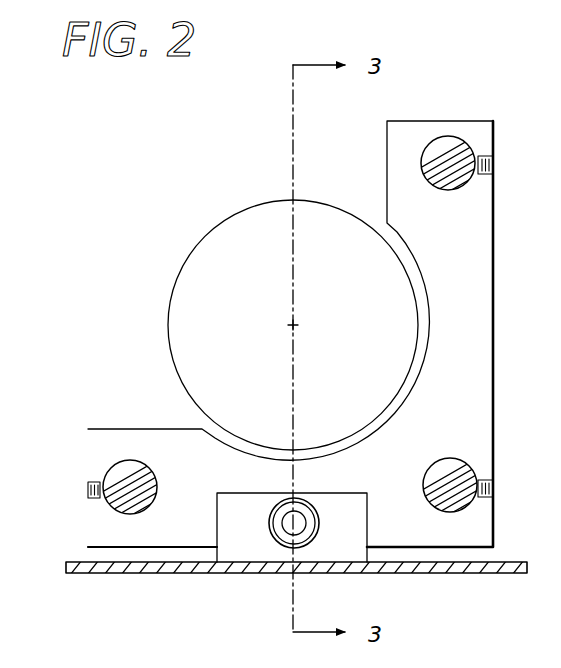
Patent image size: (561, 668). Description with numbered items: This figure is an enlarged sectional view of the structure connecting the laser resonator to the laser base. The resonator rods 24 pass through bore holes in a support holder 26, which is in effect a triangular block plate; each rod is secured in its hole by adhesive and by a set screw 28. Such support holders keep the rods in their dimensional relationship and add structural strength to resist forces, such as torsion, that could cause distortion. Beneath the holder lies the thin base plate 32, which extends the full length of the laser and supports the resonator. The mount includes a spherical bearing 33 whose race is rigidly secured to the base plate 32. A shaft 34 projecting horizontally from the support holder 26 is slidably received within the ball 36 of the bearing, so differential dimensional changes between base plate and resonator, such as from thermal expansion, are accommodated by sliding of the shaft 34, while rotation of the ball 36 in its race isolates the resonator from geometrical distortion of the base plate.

The rods 24 is at (463, 150).
The support holder 26 is at (485, 355).
The set screw 28 is at (496, 173).
The base plate 32 is at (487, 567).
The spherical bearing 33 is at (273, 540).
The shaft 34 is at (300, 530).
The ball 36 is at (286, 538).